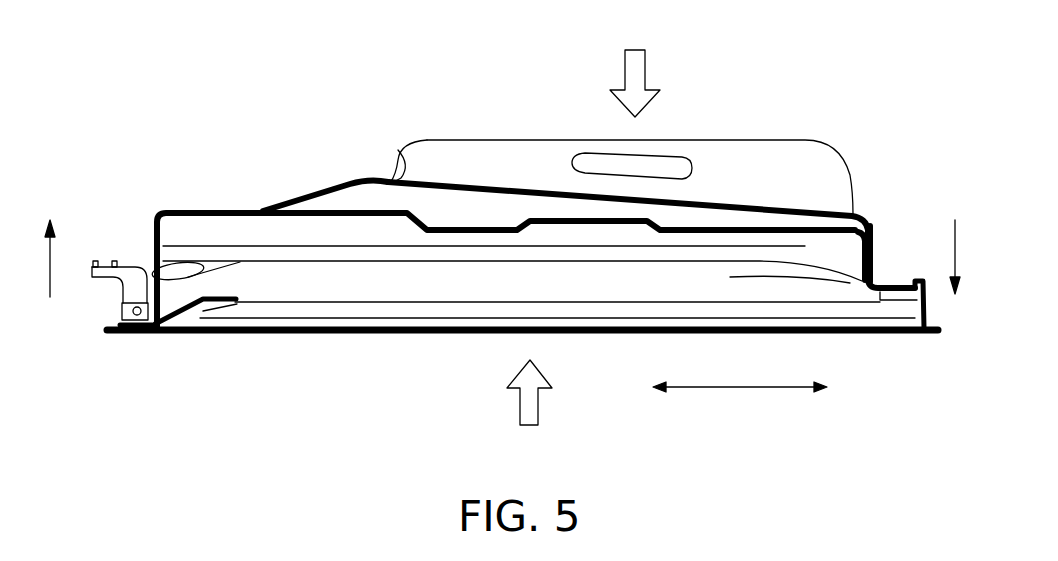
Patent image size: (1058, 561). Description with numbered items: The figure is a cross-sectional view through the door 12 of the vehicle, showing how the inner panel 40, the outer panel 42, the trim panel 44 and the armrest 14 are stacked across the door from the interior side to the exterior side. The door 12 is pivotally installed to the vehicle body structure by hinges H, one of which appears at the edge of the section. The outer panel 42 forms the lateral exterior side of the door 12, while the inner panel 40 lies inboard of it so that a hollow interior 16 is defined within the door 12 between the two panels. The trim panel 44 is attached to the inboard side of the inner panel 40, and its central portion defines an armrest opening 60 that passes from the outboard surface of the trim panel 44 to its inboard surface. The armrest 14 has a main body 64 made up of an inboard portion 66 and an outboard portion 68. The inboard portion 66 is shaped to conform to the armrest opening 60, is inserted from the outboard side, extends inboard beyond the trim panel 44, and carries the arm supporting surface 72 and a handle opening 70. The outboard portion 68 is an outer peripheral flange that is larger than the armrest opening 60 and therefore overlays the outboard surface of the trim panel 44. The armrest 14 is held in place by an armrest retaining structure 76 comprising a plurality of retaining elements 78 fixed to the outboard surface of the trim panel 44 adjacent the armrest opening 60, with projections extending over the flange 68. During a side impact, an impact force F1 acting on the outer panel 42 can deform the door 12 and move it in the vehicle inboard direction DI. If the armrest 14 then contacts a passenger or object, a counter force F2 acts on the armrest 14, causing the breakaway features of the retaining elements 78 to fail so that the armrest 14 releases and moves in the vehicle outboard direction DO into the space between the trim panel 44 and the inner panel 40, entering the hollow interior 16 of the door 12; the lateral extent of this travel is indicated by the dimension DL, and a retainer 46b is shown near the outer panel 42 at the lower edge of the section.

The door 12 is at (157, 122).
The armrest 14 is at (775, 140).
The hollow interior 16 is at (463, 214).
The inner door panel 40 is at (203, 218).
The outer door panel 42 is at (268, 334).
The interior trim panel 44 is at (316, 194).
The retainer 46b is at (901, 312).
The armrest opening 60 is at (399, 153).
The main body 64 is at (549, 163).
The inboard portion 66 is at (509, 162).
The outboard portion 68 is at (390, 186).
The handle opening 70 is at (668, 170).
The arm supporting surface 72 is at (725, 172).
The armrest retaining structure 76 is at (388, 184).
The retaining elements 78 is at (513, 190).
The hinges H is at (107, 275).
The impact force F1 is at (539, 405).
The counter force F2 is at (624, 72).
The vehicle inboard direction DI is at (53, 260).
The vehicle outboard direction DO is at (953, 250).
The lateral direction DL is at (748, 389).